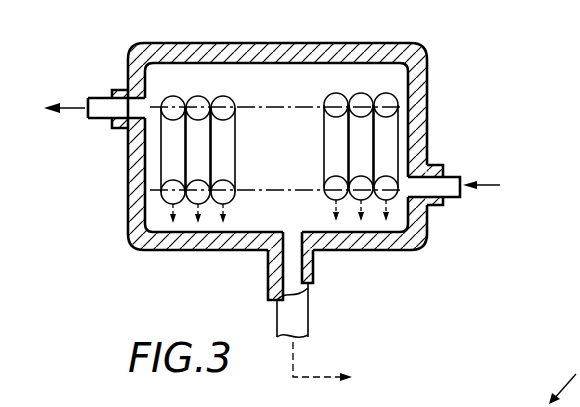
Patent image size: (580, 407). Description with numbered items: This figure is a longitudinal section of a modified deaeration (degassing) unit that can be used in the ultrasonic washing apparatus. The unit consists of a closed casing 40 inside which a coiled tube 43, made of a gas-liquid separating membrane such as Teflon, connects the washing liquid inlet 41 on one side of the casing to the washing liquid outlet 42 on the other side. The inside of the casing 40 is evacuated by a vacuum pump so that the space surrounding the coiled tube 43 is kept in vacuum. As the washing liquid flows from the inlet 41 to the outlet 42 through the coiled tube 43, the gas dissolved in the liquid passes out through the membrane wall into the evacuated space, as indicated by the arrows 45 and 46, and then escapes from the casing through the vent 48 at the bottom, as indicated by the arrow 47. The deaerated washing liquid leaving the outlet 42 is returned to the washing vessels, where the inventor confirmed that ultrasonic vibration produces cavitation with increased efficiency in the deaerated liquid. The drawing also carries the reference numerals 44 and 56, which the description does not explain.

The closed casing 40 is at (353, 52).
The washing liquid inlet 41 is at (441, 207).
The washing liquid outlet 42 is at (113, 126).
The coiled tube 43 is at (402, 124).
The chamber interior 44 is at (382, 82).
The arrows 45 is at (332, 200).
The arrow 46 is at (65, 98).
The arrow 47 is at (315, 377).
The vent 48 is at (285, 256).
The arrow reference 56 is at (564, 377).